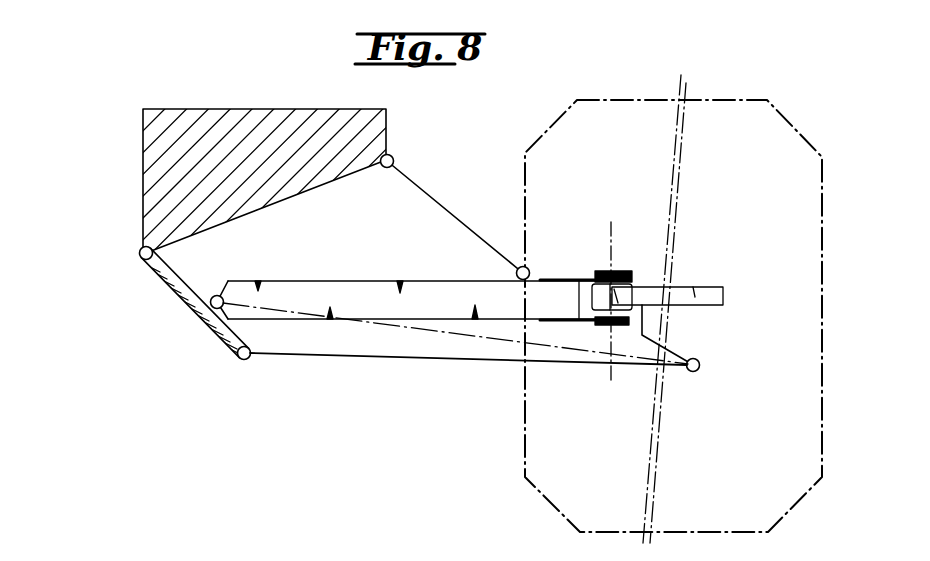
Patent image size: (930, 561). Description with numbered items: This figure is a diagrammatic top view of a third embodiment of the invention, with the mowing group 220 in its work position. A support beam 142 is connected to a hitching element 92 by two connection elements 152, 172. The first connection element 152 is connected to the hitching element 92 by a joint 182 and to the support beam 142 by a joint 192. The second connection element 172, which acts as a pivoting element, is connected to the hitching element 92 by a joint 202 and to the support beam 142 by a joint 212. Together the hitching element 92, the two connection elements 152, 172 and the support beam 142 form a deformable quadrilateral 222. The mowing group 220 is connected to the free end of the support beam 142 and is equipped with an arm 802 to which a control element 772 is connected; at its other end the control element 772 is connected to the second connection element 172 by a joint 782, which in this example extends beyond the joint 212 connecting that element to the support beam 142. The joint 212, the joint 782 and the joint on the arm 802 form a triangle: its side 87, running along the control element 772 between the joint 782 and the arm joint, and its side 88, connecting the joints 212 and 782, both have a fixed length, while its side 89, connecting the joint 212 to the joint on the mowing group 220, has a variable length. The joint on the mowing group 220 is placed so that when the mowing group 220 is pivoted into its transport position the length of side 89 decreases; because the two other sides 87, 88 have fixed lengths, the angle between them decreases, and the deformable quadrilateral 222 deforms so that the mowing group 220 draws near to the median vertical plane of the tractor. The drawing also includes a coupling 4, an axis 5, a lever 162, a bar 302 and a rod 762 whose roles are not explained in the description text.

The coupling 4 is at (621, 263).
The wheel axis 5 is at (612, 370).
The side 87 is at (553, 362).
The side 88 is at (228, 340).
The side 89 is at (393, 325).
The hitching element 92 is at (249, 108).
The support beam 142 is at (292, 282).
The first connection element 152 is at (463, 218).
The lever 162 is at (192, 312).
The second connection element 172 is at (170, 283).
The joint 182 is at (393, 157).
The joint 192 is at (533, 263).
The joint 202 is at (140, 250).
The joint 212 is at (215, 295).
The mowing group 220 is at (725, 287).
The deformable quadrilateral 222 is at (365, 223).
The bar 302 is at (334, 366).
The rod 762 is at (385, 364).
The control element 772 is at (495, 360).
The joint 782 is at (247, 360).
The arm 802 is at (675, 350).